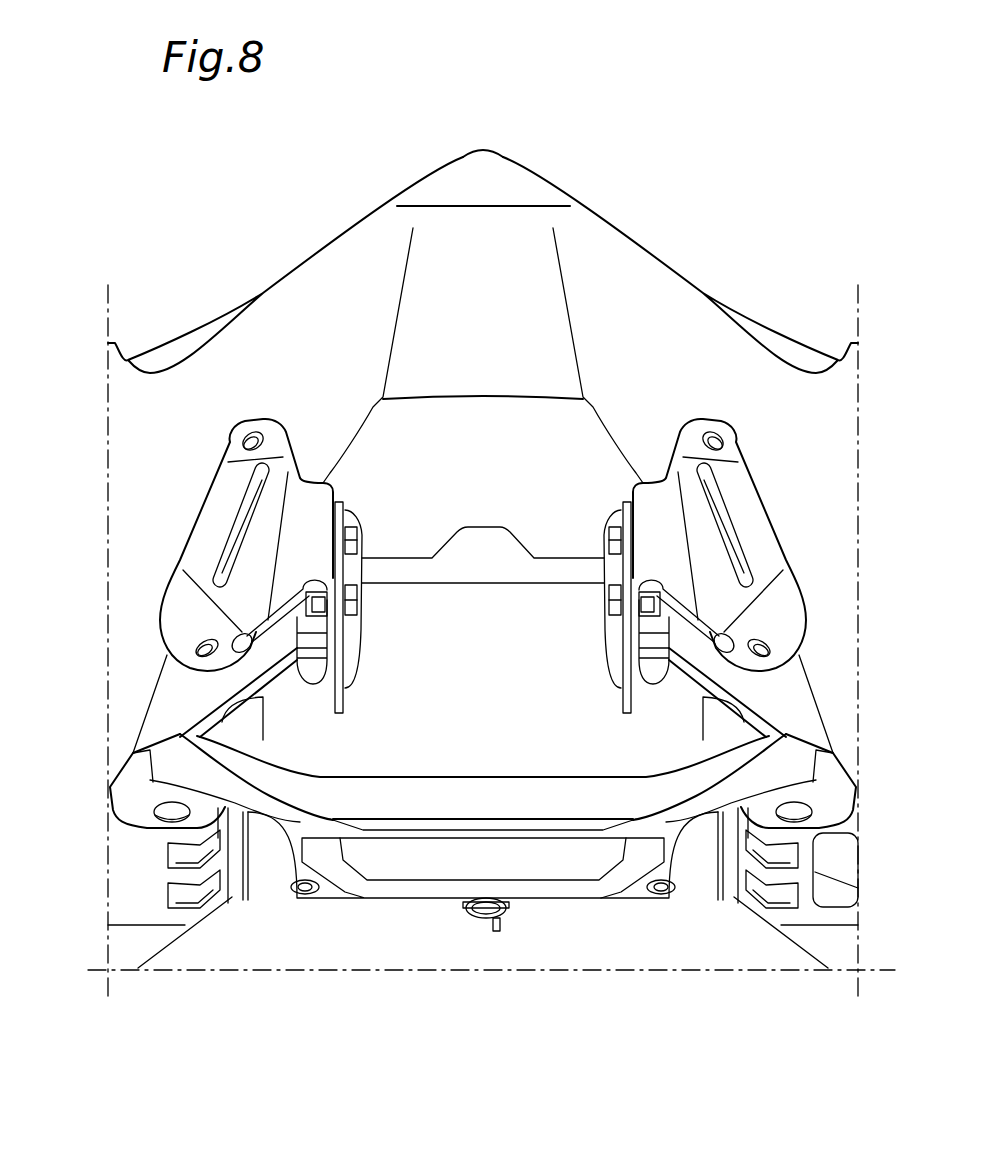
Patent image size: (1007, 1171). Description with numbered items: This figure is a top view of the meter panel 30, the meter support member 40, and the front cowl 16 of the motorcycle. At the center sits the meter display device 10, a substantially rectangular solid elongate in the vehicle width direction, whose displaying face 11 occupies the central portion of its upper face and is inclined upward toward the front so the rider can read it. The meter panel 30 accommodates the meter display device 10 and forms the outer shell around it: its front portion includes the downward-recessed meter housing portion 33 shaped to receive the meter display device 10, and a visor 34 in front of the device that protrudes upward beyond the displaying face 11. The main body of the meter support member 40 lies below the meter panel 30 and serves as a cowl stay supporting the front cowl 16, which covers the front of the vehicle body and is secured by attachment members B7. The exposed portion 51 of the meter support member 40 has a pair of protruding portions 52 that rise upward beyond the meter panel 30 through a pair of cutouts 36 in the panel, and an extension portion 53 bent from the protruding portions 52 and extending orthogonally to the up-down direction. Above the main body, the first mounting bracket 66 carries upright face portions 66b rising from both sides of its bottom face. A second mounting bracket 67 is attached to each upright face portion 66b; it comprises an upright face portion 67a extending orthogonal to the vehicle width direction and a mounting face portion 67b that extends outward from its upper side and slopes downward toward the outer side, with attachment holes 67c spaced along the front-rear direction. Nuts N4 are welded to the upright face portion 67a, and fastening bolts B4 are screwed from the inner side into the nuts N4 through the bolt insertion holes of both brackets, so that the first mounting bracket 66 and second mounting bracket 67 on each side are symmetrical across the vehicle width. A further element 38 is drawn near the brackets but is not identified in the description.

The front cowl 16 is at (683, 296).
The second mounting bracket 67 is at (173, 606).
The upright face portion 67a is at (310, 684).
The mounting face portion 67b is at (212, 522).
The attachment holes 67c is at (250, 438).
The nuts N4 is at (312, 579).
The fastening bolts B4 is at (354, 533).
The attachment members B7 is at (247, 663).
The mounting block 38 is at (358, 648).
The first mounting bracket 66 is at (483, 630).
The upright face portions 66b is at (343, 708).
The cutouts 36 is at (158, 736).
The protruding portions 52 is at (110, 788).
The meter panel 30 is at (852, 940).
The meter housing portion 33 is at (732, 870).
The visor 34 is at (547, 828).
The meter support member 40 is at (332, 822).
The meter display device 10 is at (393, 908).
The displaying face 11 is at (417, 862).
The exposed portion 51 is at (488, 822).
The extension portion 53 is at (587, 797).